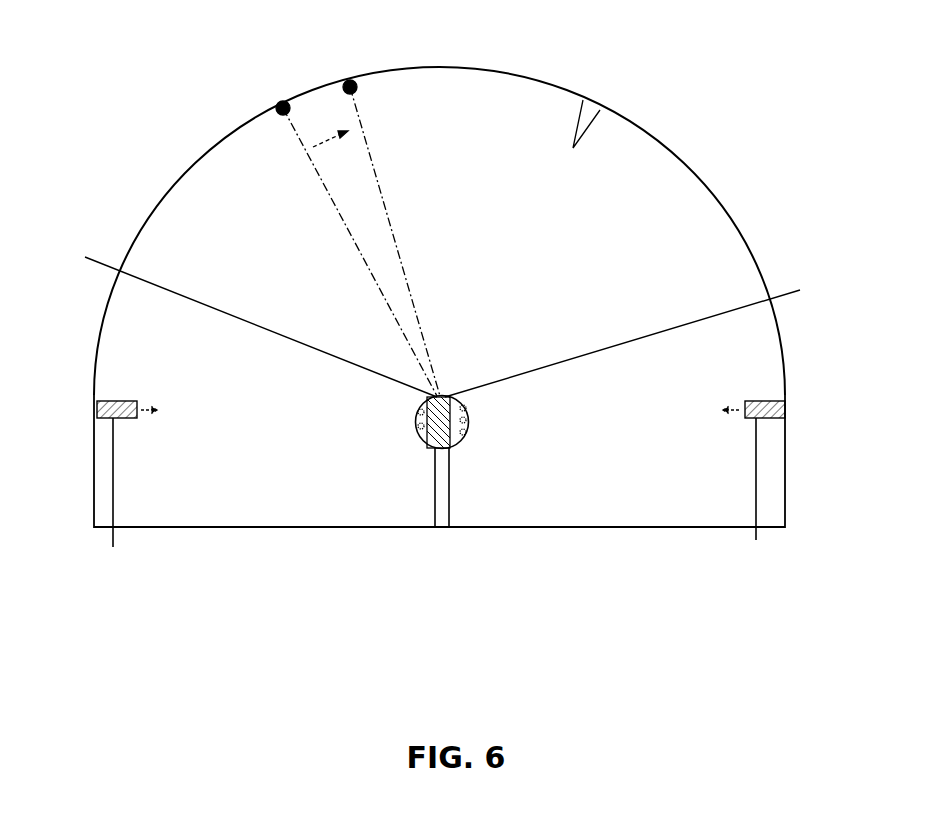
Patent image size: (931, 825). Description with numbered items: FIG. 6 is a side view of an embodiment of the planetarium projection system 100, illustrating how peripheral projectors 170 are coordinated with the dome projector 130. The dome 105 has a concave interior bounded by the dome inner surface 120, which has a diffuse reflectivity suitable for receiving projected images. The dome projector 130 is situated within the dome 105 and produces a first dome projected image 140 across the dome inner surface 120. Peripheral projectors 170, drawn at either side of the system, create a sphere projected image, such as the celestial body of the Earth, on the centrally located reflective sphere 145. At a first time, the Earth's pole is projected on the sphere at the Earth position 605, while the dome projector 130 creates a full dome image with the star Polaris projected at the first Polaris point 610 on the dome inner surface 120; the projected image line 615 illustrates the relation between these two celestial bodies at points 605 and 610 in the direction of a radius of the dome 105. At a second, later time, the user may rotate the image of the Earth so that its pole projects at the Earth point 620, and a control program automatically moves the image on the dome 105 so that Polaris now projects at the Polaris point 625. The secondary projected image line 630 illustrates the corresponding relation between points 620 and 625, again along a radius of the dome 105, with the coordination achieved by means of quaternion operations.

The projection system 100 is at (177, 667).
The dome 105 is at (690, 128).
The dome inner surface 120 is at (573, 148).
The dome projector 130 is at (452, 448).
The first dome projected image 140 is at (418, 440).
The reflective sphere 145 is at (463, 435).
The peripheral projectors 170 is at (441, 488).
The Earth position 605 is at (240, 318).
The first Polaris point 610 is at (283, 108).
The projected image line 615 is at (350, 237).
The Earth point 620 is at (647, 337).
The Polaris point 625 is at (350, 87).
The secondary projected image line 630 is at (400, 248).